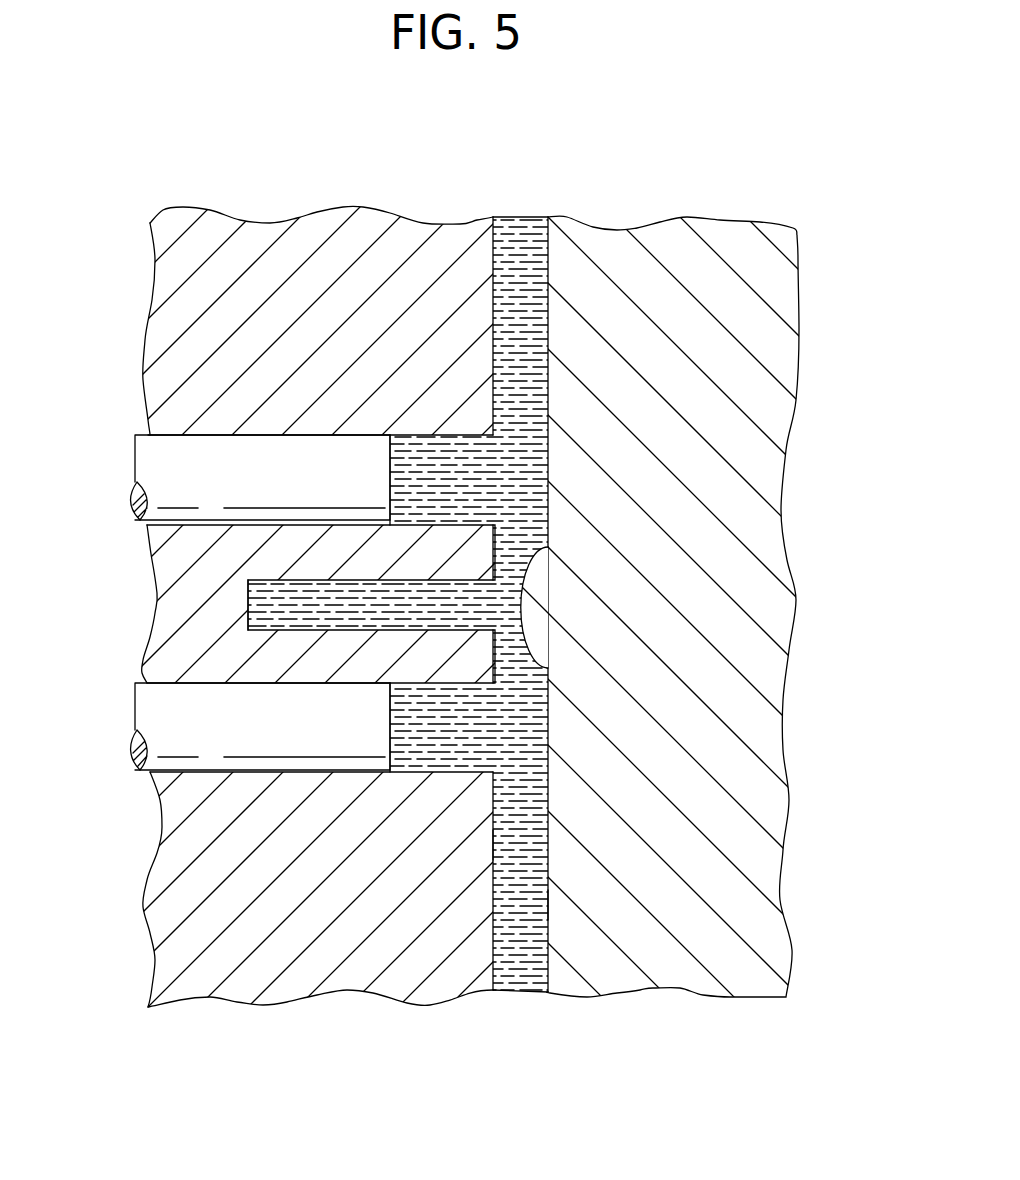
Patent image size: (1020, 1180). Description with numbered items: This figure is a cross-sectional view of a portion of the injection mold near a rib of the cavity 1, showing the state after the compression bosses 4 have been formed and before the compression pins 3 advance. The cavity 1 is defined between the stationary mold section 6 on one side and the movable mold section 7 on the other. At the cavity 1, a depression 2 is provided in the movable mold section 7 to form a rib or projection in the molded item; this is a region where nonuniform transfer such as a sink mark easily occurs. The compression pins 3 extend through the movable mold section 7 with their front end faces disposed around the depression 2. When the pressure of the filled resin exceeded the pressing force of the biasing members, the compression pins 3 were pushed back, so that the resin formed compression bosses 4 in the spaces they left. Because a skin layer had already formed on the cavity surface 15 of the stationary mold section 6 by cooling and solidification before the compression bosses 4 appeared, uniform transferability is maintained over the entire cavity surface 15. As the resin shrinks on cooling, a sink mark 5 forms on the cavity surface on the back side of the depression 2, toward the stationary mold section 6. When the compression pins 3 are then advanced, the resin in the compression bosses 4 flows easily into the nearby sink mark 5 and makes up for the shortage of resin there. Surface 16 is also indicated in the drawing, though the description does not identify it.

The cavity 1 is at (528, 348).
The depression 2 is at (257, 588).
The compression pin 3 is at (175, 483).
The compression boss 4 is at (468, 470).
The sink mark 5 is at (537, 608).
The stationary mold section 6 is at (658, 238).
The movable mold section 7 is at (318, 228).
The cavity surface 15 is at (548, 905).
The inner wall surface 16 is at (494, 845).